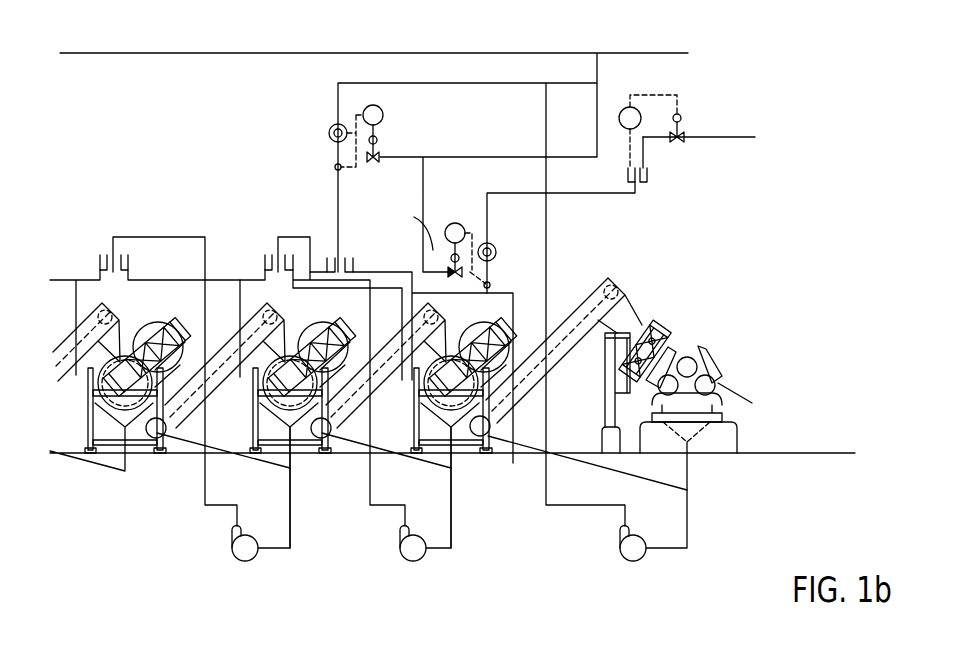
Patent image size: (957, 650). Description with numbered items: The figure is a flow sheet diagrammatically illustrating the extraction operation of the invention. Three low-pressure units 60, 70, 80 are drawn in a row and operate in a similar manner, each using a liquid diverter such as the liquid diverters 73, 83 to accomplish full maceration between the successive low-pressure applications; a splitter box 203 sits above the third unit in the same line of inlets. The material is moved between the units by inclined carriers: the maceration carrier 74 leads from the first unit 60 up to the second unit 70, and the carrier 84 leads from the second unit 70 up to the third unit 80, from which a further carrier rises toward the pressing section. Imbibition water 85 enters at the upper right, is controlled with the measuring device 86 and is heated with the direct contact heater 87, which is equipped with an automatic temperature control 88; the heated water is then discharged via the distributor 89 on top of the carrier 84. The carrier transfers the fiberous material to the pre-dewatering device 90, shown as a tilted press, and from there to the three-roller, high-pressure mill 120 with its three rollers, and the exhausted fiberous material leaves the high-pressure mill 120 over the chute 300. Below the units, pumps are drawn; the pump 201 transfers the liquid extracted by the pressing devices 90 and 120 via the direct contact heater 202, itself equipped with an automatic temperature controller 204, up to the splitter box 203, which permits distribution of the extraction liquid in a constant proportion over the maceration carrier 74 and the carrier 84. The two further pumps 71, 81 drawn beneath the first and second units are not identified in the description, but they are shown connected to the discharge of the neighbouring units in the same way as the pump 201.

The low-pressure unit 60 is at (119, 360).
The low-pressure unit 70 is at (282, 358).
The low-pressure unit 80 is at (442, 370).
The liquid diverter 73 is at (105, 251).
The liquid diverter 83 is at (271, 251).
The splitter box 203 is at (355, 252).
The first pump 71 is at (261, 500).
The second pump 81 is at (429, 500).
The pump 201 is at (656, 509).
The maceration carrier 74 is at (343, 400).
The carrier 84 is at (500, 402).
The distributor 89 is at (513, 385).
The direct contact heater 202 is at (325, 142).
The automatic temperature controller 204 is at (378, 140).
The automatic temperature control 88 is at (434, 245).
The direct contact heater 87 is at (502, 254).
The imbibition water 85 is at (687, 131).
The measuring device 86 is at (655, 168).
The pre-dewatering device 90 is at (655, 332).
The 3-roller high-pressure mill 120 is at (703, 365).
The chute 300 is at (740, 385).